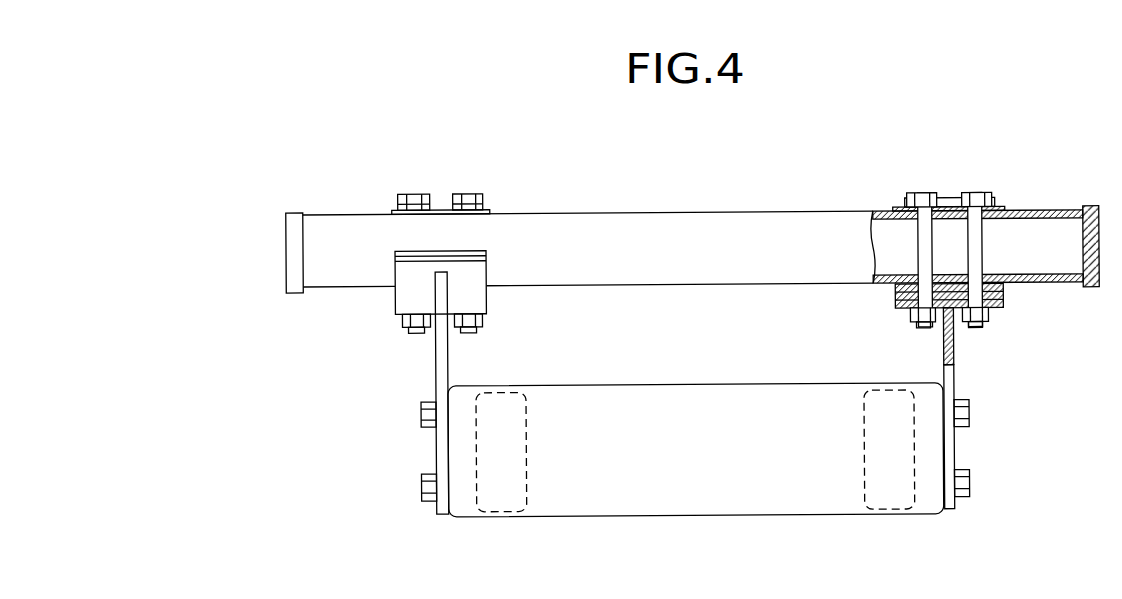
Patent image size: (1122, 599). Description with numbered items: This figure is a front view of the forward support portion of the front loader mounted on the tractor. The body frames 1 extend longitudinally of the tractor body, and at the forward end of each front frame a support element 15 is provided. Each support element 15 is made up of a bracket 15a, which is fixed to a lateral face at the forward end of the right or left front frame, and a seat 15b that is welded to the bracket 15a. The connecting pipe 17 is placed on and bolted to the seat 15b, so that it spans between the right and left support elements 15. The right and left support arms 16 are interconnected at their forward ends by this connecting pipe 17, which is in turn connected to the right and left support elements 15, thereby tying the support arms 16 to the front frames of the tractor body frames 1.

The body frame 1 is at (515, 397).
The support element 15 is at (398, 332).
The bracket 15a is at (437, 378).
The seat 15b is at (398, 302).
The support arm 16 is at (292, 245).
The connecting pipe 17 is at (700, 275).